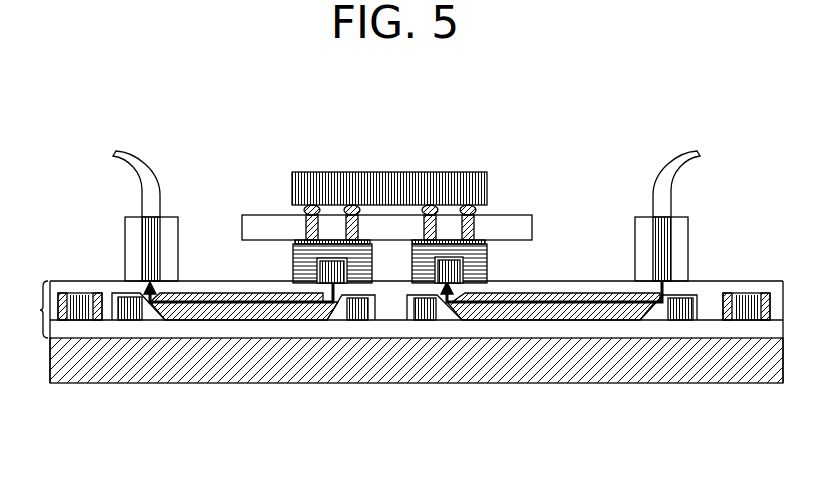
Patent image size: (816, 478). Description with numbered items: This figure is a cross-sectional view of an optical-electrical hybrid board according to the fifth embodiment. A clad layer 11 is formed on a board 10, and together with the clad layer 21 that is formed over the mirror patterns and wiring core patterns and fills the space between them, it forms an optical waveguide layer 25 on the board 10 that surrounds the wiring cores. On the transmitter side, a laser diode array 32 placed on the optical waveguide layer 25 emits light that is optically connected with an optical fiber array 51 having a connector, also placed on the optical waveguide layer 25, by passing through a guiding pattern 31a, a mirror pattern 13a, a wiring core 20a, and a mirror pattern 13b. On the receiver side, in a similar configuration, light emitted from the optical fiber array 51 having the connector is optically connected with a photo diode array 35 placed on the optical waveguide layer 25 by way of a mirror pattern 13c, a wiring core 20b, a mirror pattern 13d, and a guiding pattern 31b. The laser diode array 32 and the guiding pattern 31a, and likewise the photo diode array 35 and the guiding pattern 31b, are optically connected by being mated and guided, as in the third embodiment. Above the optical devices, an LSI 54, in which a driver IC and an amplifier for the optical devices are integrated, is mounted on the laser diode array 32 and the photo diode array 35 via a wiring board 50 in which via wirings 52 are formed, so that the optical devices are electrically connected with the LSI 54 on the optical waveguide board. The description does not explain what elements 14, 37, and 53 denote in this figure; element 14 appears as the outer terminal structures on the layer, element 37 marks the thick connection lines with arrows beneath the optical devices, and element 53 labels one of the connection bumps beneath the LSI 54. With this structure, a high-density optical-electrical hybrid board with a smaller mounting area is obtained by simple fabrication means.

The board 10 is at (178, 355).
The clad layer 11 is at (297, 327).
The mirror pattern 13a is at (353, 322).
The mirror pattern 13b is at (132, 320).
The mirror pattern 13c is at (675, 322).
The mirror pattern 13d is at (433, 322).
The terminal electrode 14 is at (80, 320).
The wiring core 20a is at (240, 303).
The wiring core 20b is at (545, 303).
The clad layer 21 is at (773, 293).
The optical waveguide layer 25 is at (396, 332).
The guiding pattern 31a is at (293, 262).
The guiding pattern 31b is at (485, 264).
The laser diode array 32 is at (362, 266).
The photo diode array 35 is at (440, 246).
The connection wiring 37 is at (298, 268).
The wiring board 50 is at (525, 215).
The optical fiber array 51 is at (125, 217).
The via wirings 52 is at (306, 213).
The via 53 is at (350, 205).
The LSI 54 is at (322, 172).